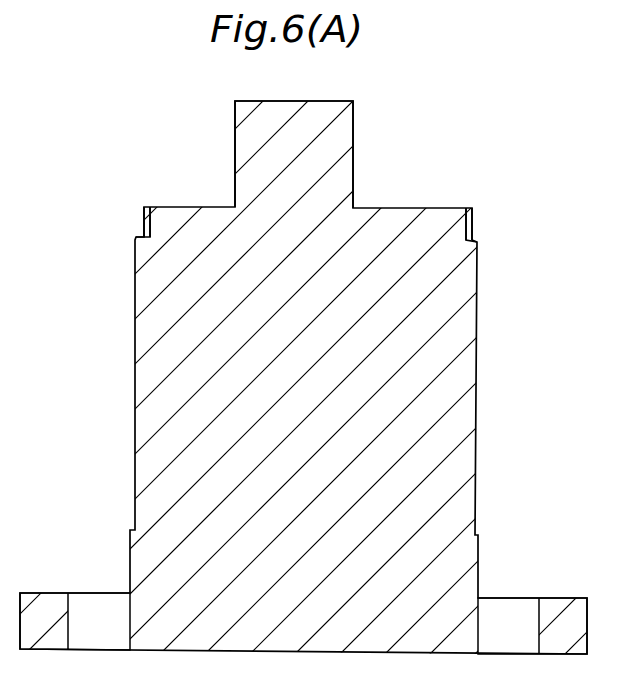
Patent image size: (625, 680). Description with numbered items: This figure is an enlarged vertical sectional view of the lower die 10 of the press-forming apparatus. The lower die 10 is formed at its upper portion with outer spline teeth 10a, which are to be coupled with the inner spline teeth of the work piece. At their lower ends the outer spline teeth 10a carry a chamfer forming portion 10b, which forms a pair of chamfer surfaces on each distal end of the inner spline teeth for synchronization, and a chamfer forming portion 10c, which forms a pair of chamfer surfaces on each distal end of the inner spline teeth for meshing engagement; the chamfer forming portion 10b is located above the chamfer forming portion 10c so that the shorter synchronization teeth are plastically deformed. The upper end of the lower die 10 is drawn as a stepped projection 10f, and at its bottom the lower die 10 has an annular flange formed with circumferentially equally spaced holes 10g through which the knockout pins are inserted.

The lower die 10 is at (445, 344).
The outer spline teeth 10a is at (142, 212).
The chamfer forming portion 10b is at (140, 236).
The chamfer forming portion 10c is at (468, 242).
The protrusion 10f is at (287, 124).
The holes 10g is at (90, 615).